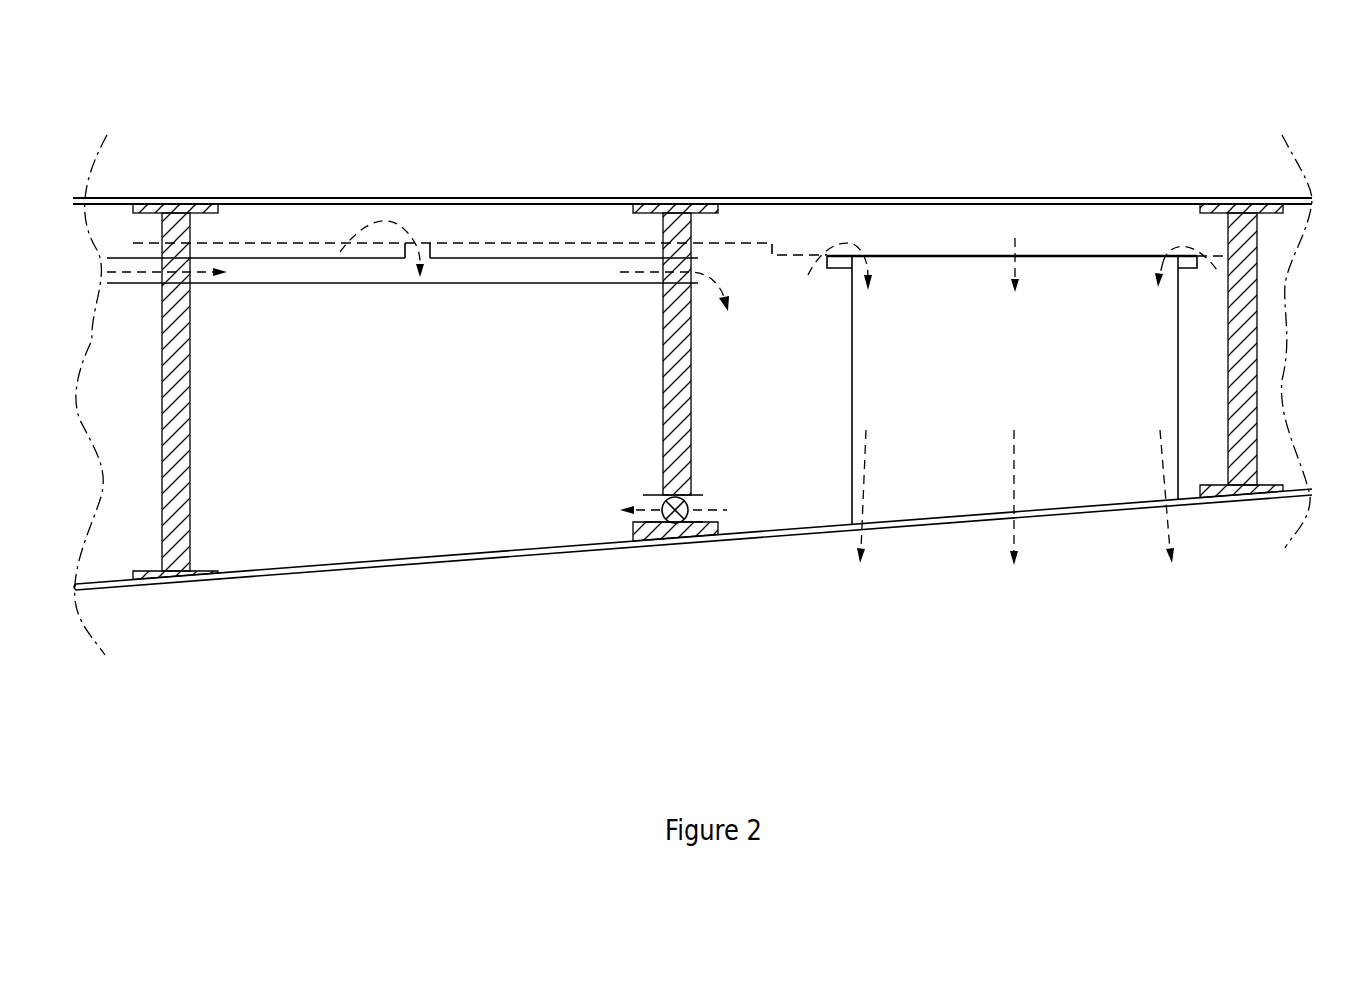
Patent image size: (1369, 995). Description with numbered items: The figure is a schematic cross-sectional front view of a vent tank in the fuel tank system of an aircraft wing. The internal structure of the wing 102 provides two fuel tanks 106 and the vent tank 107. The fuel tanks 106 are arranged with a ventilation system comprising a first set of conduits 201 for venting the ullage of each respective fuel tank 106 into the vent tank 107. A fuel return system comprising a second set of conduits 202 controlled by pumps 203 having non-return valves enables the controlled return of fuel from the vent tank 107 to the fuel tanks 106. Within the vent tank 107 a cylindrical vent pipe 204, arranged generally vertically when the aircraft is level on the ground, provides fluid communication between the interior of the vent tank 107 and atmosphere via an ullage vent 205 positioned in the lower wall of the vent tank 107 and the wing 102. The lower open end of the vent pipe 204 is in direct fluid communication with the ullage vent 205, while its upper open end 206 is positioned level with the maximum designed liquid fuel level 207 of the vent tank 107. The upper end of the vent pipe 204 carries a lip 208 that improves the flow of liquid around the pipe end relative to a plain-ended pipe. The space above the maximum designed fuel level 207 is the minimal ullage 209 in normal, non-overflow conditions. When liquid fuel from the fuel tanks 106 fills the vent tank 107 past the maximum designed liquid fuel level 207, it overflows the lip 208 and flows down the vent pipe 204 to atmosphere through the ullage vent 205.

The wing 102 is at (417, 572).
The fuel tank 106 is at (107, 218).
The vent tank 107 is at (780, 470).
The first set of conduits 201 is at (233, 260).
The second set of conduits 202 is at (643, 522).
The pump 203 is at (668, 540).
The vent pipe 204 is at (948, 468).
The ullage vent 205 is at (1113, 505).
The upper open end 206 is at (955, 255).
The maximum designed liquid fuel level 207 is at (771, 255).
The lip 208 is at (838, 270).
The minimal ullage 209 is at (1064, 215).